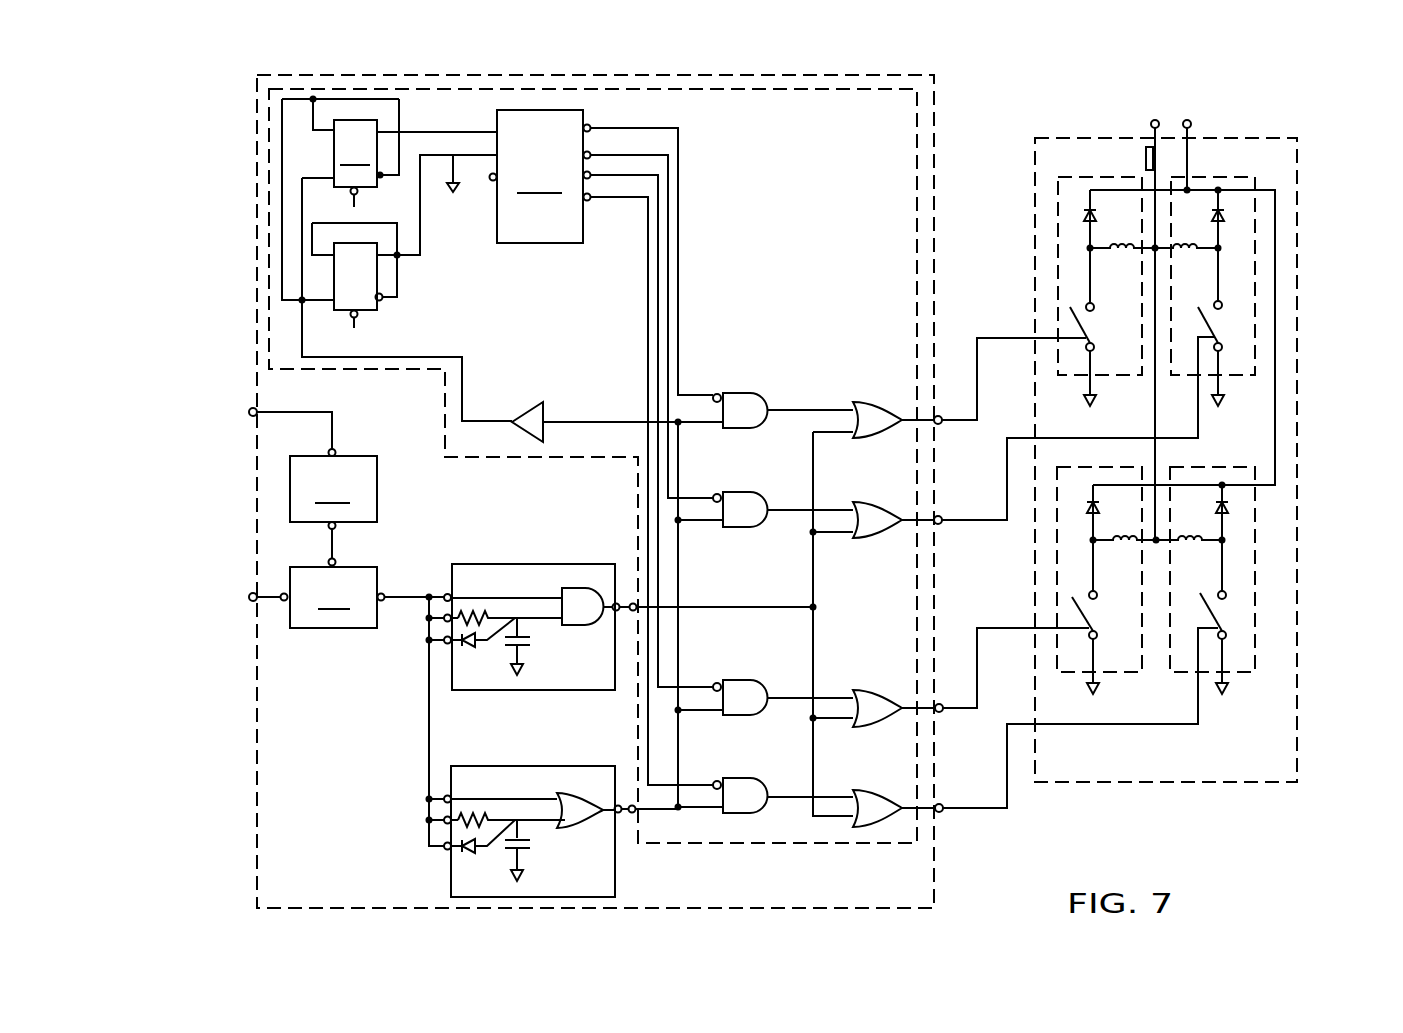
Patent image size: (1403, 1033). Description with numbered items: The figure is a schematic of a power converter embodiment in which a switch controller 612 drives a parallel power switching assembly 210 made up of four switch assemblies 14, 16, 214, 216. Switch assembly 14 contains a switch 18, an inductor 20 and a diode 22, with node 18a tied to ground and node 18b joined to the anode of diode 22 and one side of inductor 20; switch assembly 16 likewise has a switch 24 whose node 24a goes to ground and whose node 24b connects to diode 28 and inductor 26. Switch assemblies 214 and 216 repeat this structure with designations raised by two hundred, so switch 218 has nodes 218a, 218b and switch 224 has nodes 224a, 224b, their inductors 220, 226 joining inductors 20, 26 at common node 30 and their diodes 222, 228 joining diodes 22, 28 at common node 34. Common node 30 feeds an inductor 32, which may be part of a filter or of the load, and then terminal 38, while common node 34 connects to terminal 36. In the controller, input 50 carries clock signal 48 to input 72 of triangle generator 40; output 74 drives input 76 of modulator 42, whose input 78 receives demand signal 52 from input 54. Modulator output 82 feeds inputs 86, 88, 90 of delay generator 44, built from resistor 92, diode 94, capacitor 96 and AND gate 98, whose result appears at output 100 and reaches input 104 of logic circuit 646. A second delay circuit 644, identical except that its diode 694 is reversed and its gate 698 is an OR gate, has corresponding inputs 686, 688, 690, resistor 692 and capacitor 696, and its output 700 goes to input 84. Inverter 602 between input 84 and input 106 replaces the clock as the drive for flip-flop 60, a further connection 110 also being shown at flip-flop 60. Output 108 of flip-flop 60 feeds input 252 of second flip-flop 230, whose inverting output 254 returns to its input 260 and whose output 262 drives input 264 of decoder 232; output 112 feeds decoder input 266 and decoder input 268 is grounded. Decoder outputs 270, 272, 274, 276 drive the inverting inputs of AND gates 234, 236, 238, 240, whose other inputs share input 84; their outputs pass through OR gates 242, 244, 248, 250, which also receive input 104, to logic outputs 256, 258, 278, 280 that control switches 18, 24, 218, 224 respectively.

The switch assembly 14 is at (1058, 217).
The switch assembly 16 is at (1255, 228).
The switch 18 is at (1096, 322).
The node 18a is at (1092, 352).
The node 18b is at (1086, 307).
The inductor 20 is at (1123, 266).
The diode 22 is at (1097, 217).
The switch 24 is at (1222, 322).
The node 24a is at (1222, 347).
The node 24b is at (1222, 305).
The inductor 26 is at (1188, 266).
The diode 28 is at (1225, 215).
The common node 30 is at (1158, 246).
The inductor 32 is at (1145, 158).
The common node 34 is at (1187, 190).
The terminal 36 is at (1187, 120).
The terminal 38 is at (1155, 120).
The triangle generator 40 is at (333, 489).
The modulator 42 is at (333, 597).
The delay generator 44 is at (517, 564).
The clock signal 48 is at (194, 426).
The input 50 is at (253, 408).
The demand signal 52 is at (186, 610).
The input 54 is at (253, 593).
The flip-flop 60 is at (355, 163).
The input 72 is at (335, 450).
The output 74 is at (336, 527).
The input 76 is at (336, 562).
The input 78 is at (284, 601).
The output 82 is at (384, 596).
The input 84 is at (632, 813).
The input 86 is at (447, 594).
The input 88 is at (444, 620).
The input 90 is at (447, 644).
The resistor 92 is at (473, 613).
The diode 94 is at (468, 648).
The capacitor 96 is at (525, 648).
The AND gate 98 is at (580, 610).
The output 100 is at (616, 603).
The input 104 is at (633, 603).
The input 106 is at (318, 180).
The output 108 is at (383, 178).
The counter feedback line 110 is at (327, 130).
The output 112 is at (399, 125).
The parallel power switching assembly 210 is at (1260, 138).
The switch assembly 214 is at (1057, 523).
The switch assembly 216 is at (1255, 520).
The switch 218 is at (1088, 616).
The switch contact 218a is at (1095, 640).
The switch contact 218b is at (1089, 593).
The inductor 220 is at (1120, 545).
The diode 222 is at (1090, 502).
The switch 224 is at (1224, 620).
The switch contact 224a is at (1226, 635).
The switch contact 224b is at (1226, 595).
The inductor 226 is at (1192, 545).
The diode 228 is at (1217, 505).
The second flip-flop 230 is at (340, 273).
The decoder 232 is at (544, 176).
The AND gate 234 is at (743, 393).
The AND gate 236 is at (740, 492).
The AND gate 238 is at (745, 680).
The AND gate 240 is at (743, 778).
The OR gate 242 is at (868, 402).
The OR gate 244 is at (875, 502).
The OR gate 248 is at (875, 690).
The OR gate 250 is at (875, 790).
The input 252 is at (313, 302).
The inverting output 254 is at (383, 297).
The output 256 is at (938, 416).
The output 258 is at (938, 516).
The input 260 is at (323, 252).
The output 262 is at (387, 257).
The input 264 is at (443, 160).
The input 266 is at (468, 132).
The input 268 is at (493, 181).
The output 270 is at (613, 128).
The output 272 is at (654, 153).
The output 274 is at (653, 171).
The output 276 is at (640, 194).
The output 278 is at (939, 704).
The output 280 is at (939, 804).
The inverter 602 is at (540, 402).
The switch controller 612 is at (934, 95).
The second delay circuit 644 is at (525, 766).
The logic circuit 646 is at (917, 158).
The delay circuit input 686 is at (444, 799).
The delay circuit input 688 is at (444, 820).
The delay circuit input 690 is at (447, 850).
The resistor 692 is at (470, 815).
The diode 694 is at (470, 850).
The capacitor 696 is at (525, 850).
The OR gate 698 is at (580, 812).
The output 700 is at (618, 805).